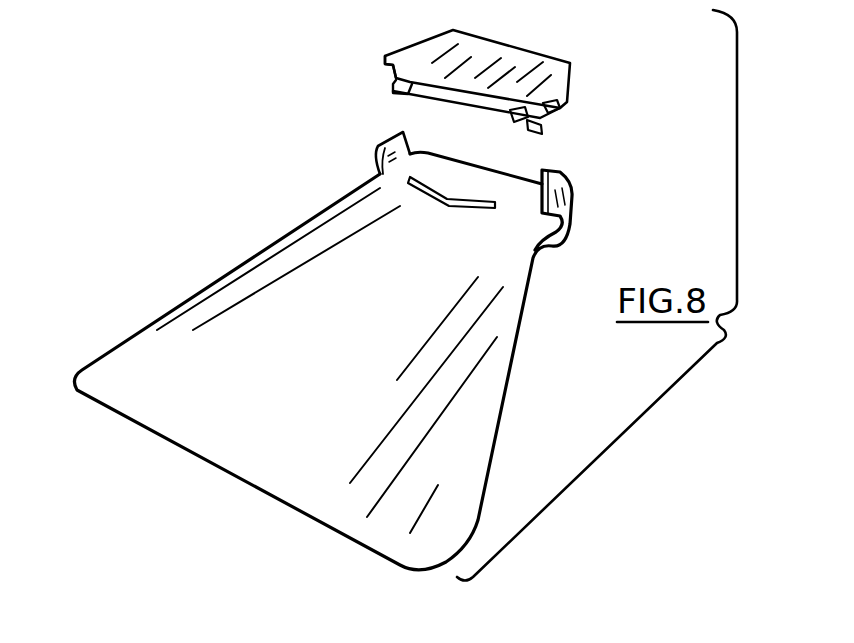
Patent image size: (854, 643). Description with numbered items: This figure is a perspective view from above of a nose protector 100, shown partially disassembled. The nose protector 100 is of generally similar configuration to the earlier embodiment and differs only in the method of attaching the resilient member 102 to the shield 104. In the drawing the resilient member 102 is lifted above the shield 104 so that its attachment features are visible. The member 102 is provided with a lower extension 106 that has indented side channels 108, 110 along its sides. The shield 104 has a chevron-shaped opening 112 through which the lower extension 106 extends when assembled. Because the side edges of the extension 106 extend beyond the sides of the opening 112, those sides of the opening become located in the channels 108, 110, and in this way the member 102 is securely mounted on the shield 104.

The nose protector 100 is at (222, 175).
The resilient member 102 is at (573, 77).
The shield 104 is at (497, 417).
The lower extension 106 is at (421, 97).
The indented side channel 108 is at (395, 85).
The indented side channel 110 is at (546, 124).
The chevron-shaped opening 112 is at (462, 208).